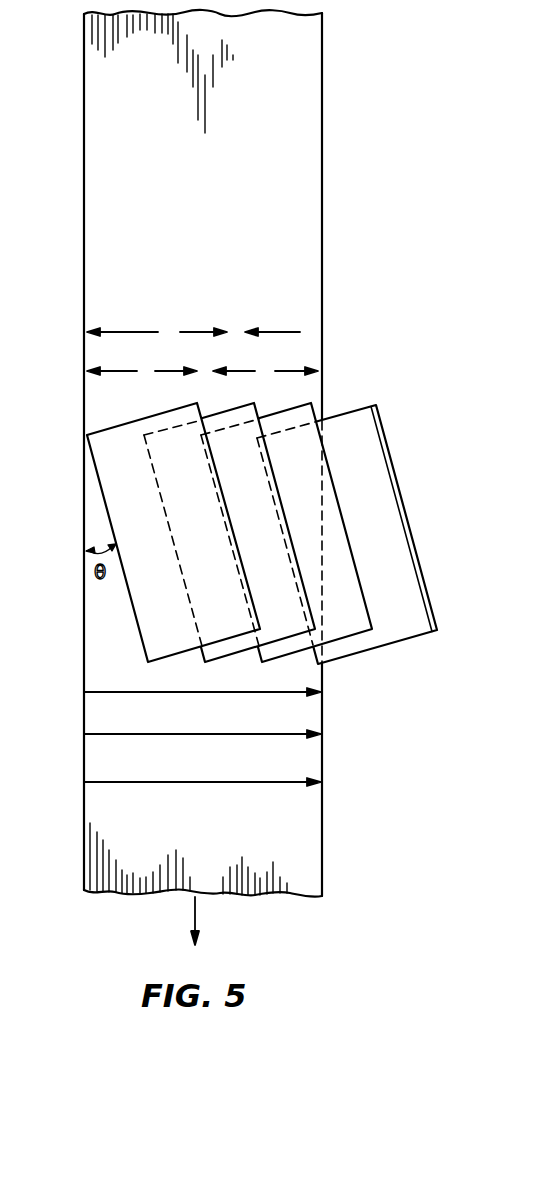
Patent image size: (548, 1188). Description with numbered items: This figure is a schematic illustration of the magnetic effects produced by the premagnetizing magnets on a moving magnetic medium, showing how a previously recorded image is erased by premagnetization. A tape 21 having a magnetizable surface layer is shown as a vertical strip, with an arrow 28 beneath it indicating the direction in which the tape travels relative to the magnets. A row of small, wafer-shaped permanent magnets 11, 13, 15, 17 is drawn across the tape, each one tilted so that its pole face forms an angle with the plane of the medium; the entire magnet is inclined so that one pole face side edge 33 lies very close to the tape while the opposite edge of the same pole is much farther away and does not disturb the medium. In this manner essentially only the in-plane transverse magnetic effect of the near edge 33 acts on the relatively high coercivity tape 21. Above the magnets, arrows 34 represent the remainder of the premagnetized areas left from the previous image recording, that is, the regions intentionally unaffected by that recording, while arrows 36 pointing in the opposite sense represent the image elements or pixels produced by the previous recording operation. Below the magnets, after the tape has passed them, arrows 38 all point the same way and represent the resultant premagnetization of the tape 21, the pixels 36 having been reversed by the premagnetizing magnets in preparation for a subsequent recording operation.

The tape 21 is at (84, 155).
The first plate (vane) 11 is at (183, 413).
The magnet 13 is at (244, 413).
The third plate (vane) 15 is at (303, 413).
The fourth plate (vane) 17 is at (365, 432).
The pole face side edge 33 is at (202, 648).
The arrows representing remainder of premagnetized areas 34 is at (195, 332).
The arrows representing image elements or pixels 36 is at (112, 371).
The arrows representing resultant premagnetization 38 is at (133, 735).
The flow direction 28 is at (197, 916).